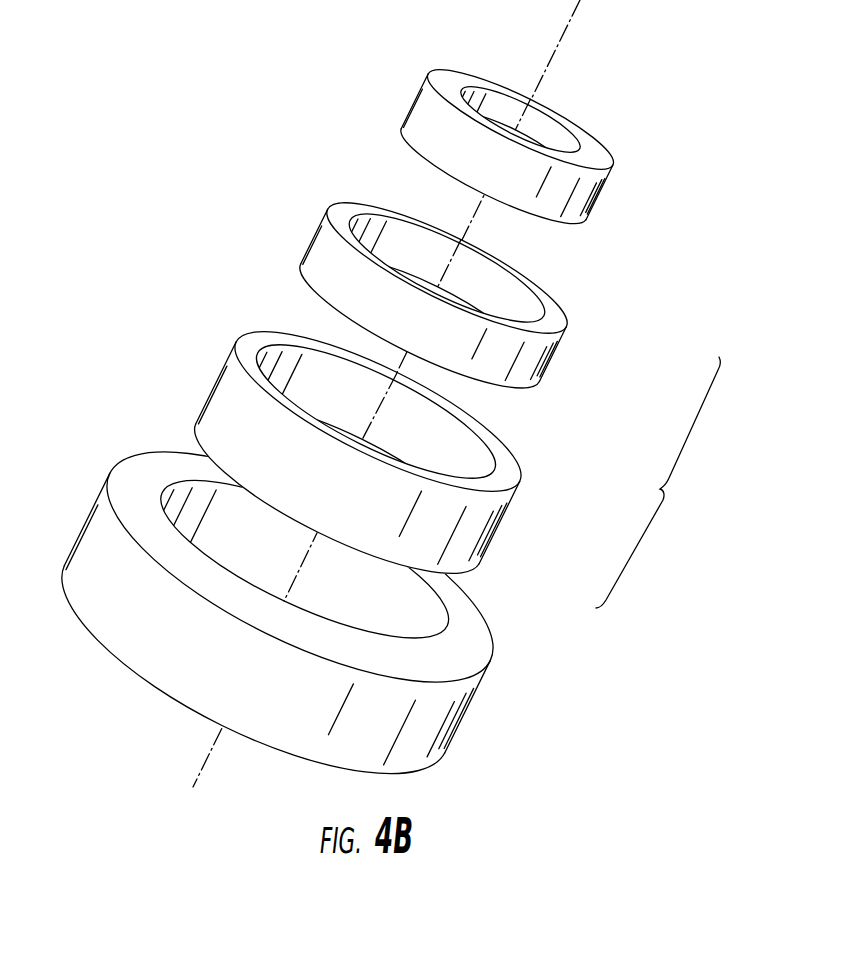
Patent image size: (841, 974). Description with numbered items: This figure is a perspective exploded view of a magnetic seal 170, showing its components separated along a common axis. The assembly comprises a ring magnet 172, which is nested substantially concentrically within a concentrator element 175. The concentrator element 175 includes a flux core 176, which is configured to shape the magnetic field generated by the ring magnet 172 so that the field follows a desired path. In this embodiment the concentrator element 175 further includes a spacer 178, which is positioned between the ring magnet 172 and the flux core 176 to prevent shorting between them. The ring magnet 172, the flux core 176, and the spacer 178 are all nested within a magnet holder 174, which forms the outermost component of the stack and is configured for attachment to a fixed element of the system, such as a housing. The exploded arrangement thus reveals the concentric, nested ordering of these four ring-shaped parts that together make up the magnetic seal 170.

The magnetic seal 170 is at (215, 270).
The ring magnet 172 is at (598, 189).
The magnet holder 174 is at (467, 711).
The concentrator element 175 is at (658, 482).
The flux core 176 is at (497, 527).
The spacer 178 is at (550, 354).